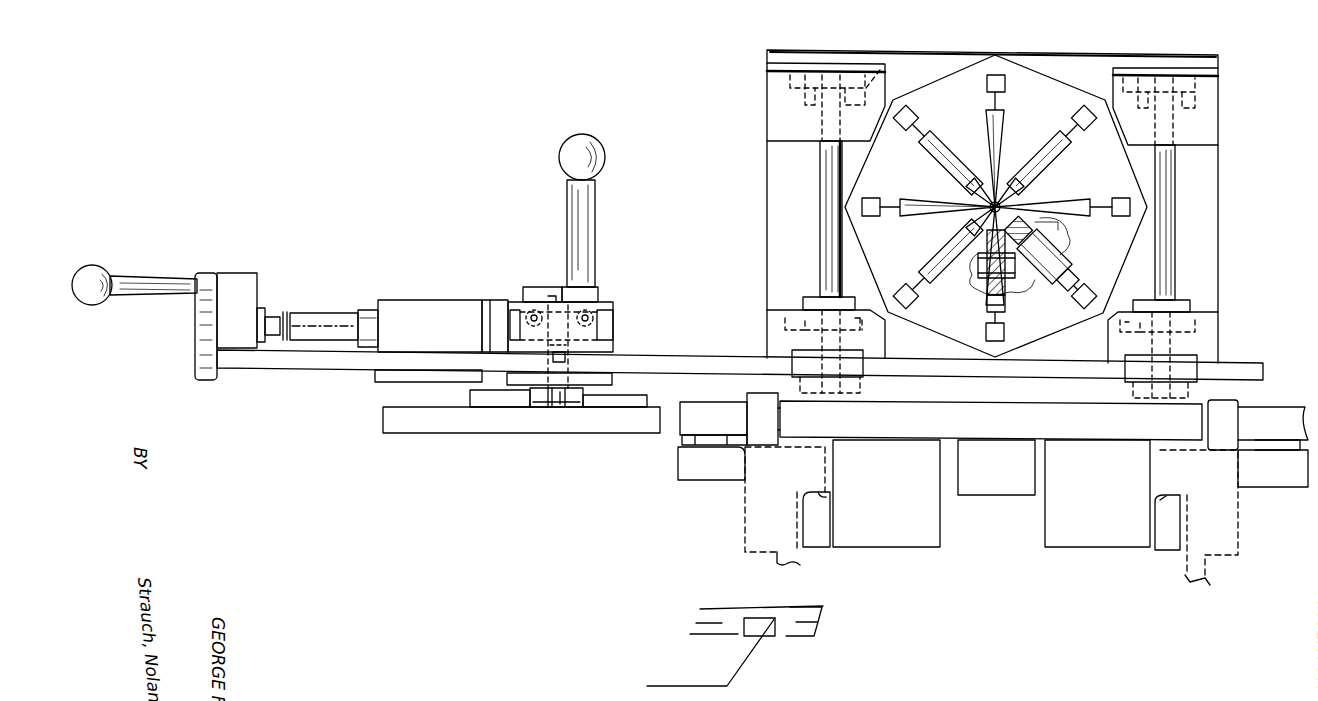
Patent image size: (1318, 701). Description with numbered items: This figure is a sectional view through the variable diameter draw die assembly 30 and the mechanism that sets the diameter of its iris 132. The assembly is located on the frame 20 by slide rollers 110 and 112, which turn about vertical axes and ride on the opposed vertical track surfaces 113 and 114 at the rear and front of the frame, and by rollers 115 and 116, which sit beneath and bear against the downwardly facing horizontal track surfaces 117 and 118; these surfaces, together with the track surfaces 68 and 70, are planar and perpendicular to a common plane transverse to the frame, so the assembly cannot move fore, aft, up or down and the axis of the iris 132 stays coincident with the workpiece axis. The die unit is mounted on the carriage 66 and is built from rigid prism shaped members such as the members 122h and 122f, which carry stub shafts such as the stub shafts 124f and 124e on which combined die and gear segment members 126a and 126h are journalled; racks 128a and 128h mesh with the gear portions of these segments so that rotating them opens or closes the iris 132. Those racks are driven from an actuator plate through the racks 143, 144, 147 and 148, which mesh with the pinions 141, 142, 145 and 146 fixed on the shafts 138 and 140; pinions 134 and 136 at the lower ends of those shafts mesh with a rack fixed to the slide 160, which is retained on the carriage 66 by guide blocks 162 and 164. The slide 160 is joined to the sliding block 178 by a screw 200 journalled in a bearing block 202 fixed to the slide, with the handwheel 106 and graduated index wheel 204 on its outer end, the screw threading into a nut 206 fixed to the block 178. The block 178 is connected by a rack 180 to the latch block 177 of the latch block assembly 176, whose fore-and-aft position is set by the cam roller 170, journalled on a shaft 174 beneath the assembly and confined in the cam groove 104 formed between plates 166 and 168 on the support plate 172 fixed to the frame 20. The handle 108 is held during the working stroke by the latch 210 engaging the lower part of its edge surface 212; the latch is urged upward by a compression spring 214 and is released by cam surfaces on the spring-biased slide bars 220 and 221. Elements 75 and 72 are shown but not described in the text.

The variable diameter draw die assembly 30 is at (768, 55).
The pinion 142 is at (893, 48).
The rack 144 is at (786, 80).
The rack 148 is at (1126, 63).
The pinion 146 is at (1195, 97).
The shaft 138 is at (822, 235).
The shaft 140 is at (1176, 214).
The pinion 134 is at (775, 350).
The rack 143 is at (785, 318).
The pinion 141 is at (866, 330).
The pinion 145 is at (1200, 329).
The rack 147 is at (1120, 325).
The slide 160 is at (662, 362).
The guide block 162 is at (863, 372).
The pinion 136 is at (1151, 378).
The guide block 164 is at (1118, 372).
The iris 132 is at (1030, 193).
The combined die and gear segment member 126h is at (942, 198).
The rack 128h is at (871, 216).
The prism shaped member 122h is at (1029, 141).
The combined die and gear segment member 126a is at (940, 140).
The rack 128a is at (917, 112).
The prism shaped member 122f is at (968, 271).
The stub shaft 124f is at (1016, 290).
The stub shaft 124e is at (1066, 235).
The carriage 66 is at (950, 410).
The upright post 75 is at (752, 395).
The track surface 70 is at (762, 445).
The slide roller 112 is at (682, 445).
The track surface 114 is at (745, 470).
The roller 116 is at (822, 522).
The track surface 118 is at (826, 497).
The roller 115 is at (1160, 526).
The track surface 117 is at (1160, 500).
The frame 20 is at (777, 560).
The right upright post 72 is at (1230, 400).
The track surface 68 is at (1226, 448).
The slide roller 110 is at (1276, 486).
The track surface 113 is at (1238, 512).
The handwheel 106 is at (172, 268).
The graduated index wheel 204 is at (197, 333).
The bearing block 202 is at (224, 272).
The screw 200 is at (292, 318).
The nut 206 is at (362, 308).
The sliding block 178 is at (445, 298).
The rack 180 is at (492, 298).
The latch block assembly 176 is at (616, 302).
The slide bar 220 is at (513, 321).
The slide bar 221 is at (613, 319).
The compression spring 214 is at (553, 358).
The edge surface 212 is at (560, 288).
The latch 210 is at (550, 296).
The handle 108 is at (562, 142).
The latch block 177 is at (612, 383).
The plate 166 is at (468, 398).
The cam groove 104 is at (550, 404).
The shaft 174 is at (562, 404).
The plate 168 is at (610, 402).
The support plate 172 is at (383, 417).
The cam roller 170 is at (555, 407).